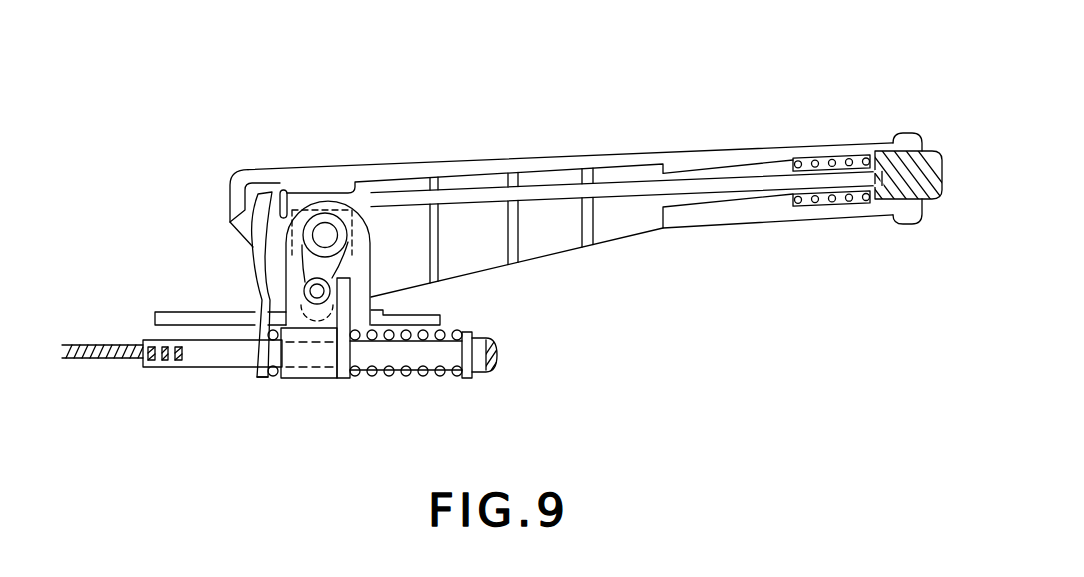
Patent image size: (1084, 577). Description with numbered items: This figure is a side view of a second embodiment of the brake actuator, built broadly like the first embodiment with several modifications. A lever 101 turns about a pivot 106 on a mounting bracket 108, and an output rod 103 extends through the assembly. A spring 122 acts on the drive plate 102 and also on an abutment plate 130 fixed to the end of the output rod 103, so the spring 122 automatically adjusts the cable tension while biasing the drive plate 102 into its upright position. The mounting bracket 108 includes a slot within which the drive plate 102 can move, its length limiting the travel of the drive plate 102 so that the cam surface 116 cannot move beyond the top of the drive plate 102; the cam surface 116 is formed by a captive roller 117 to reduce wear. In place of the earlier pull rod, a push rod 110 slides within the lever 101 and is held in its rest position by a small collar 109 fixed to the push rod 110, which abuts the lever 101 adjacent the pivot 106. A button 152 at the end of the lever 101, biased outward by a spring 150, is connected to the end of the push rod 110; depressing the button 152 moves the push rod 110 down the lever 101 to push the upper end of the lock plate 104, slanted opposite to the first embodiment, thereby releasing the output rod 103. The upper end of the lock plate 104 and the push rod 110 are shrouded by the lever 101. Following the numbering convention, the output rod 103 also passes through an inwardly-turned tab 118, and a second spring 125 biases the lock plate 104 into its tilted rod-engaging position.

The lever 101 is at (555, 173).
The drive plate 102 is at (343, 380).
The output rod 103 is at (220, 362).
The lock plate 104 is at (253, 245).
The pivot 106 is at (321, 222).
The mounting bracket 108 is at (366, 268).
The small collar 109 is at (278, 190).
The push rod 110 is at (640, 196).
The cam surface 116 is at (304, 294).
The captive roller 117 is at (370, 300).
The inwardly-turned tab 118 is at (309, 368).
The spring 122 is at (425, 375).
The second spring 125 is at (272, 379).
The abutment plate 130 is at (342, 353).
The spring 150 is at (828, 158).
The button 152 is at (905, 185).